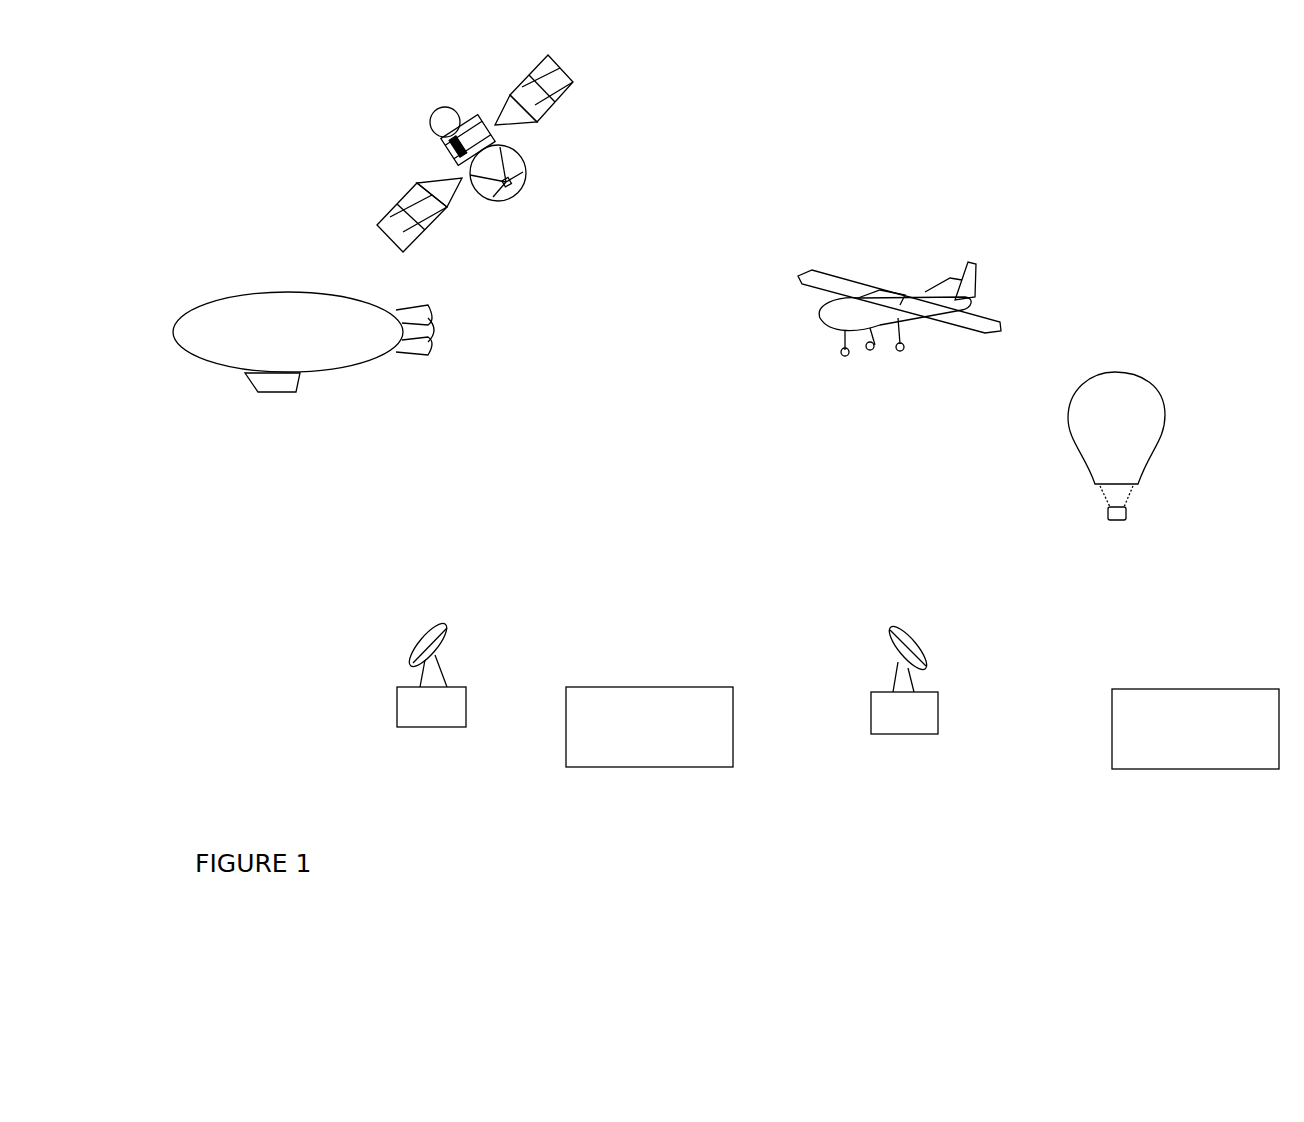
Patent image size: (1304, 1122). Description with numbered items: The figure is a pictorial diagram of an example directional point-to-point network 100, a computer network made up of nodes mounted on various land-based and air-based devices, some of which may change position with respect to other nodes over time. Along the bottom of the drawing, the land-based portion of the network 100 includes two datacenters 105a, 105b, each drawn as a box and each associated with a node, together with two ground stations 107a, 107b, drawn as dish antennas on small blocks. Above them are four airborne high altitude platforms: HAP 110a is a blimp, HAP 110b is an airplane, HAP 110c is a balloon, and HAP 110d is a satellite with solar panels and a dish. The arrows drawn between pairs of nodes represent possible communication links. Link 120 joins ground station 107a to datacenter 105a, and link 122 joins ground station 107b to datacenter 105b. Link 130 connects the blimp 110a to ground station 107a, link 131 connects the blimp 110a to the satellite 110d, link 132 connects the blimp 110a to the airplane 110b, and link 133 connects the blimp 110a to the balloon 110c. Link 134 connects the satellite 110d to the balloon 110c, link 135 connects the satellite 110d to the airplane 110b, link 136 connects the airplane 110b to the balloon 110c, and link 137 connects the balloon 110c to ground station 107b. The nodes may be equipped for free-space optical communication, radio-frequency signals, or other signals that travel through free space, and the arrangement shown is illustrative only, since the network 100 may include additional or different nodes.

The directional point-to-point network 100 is at (269, 841).
The high altitude platform (blimp) 110a is at (288, 300).
The high altitude platform (airplane) 110b is at (868, 290).
The high altitude platform (balloon) 110c is at (1125, 395).
The high altitude platform (satellite) 110d is at (440, 112).
The ground station 107a is at (431, 673).
The ground station 107b is at (904, 678).
The datacenter 105a is at (649, 727).
The datacenter 105b is at (1195, 729).
The communication link 120 is at (564, 725).
The communication link 122 is at (1109, 725).
The communication link 130 is at (259, 394).
The communication link 131 is at (474, 200).
The communication link 132 is at (825, 335).
The communication link 133 is at (1105, 515).
The communication link 134 is at (1103, 511).
The communication link 135 is at (818, 318).
The communication link 136 is at (1103, 509).
The communication link 137 is at (917, 645).